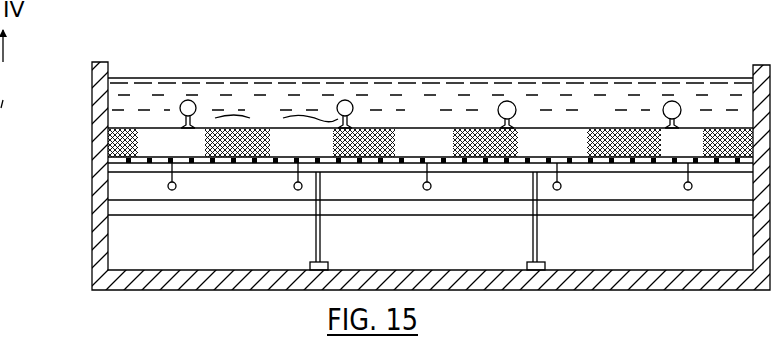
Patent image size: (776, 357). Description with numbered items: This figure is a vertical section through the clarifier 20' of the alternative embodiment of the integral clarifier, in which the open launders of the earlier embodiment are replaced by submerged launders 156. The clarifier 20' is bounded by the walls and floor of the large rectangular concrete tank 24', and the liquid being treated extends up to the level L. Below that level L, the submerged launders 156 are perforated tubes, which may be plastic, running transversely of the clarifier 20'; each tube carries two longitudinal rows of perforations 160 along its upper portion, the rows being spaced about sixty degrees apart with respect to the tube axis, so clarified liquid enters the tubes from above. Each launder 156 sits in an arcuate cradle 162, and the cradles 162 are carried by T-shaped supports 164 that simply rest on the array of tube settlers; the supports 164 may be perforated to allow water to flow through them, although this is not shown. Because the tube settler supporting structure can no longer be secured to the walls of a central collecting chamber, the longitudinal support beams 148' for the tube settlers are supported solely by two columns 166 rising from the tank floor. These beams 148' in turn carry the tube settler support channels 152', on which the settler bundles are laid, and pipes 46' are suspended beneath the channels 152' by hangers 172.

The clarifier 20' is at (431, 195).
The tank 24' is at (405, 166).
The liquid level L is at (296, 78).
The T-shaped support 164 is at (430, 117).
The tube settler support channel 152' is at (430, 164).
The longitudinal support beam 148' is at (430, 178).
The pipe 46' is at (430, 193).
The column 166 is at (321, 240).
The hanger 172 is at (562, 186).
The perforation 160 is at (193, 101).
The submerged launder 156 is at (510, 99).
The arcuate cradle 162 is at (183, 119).